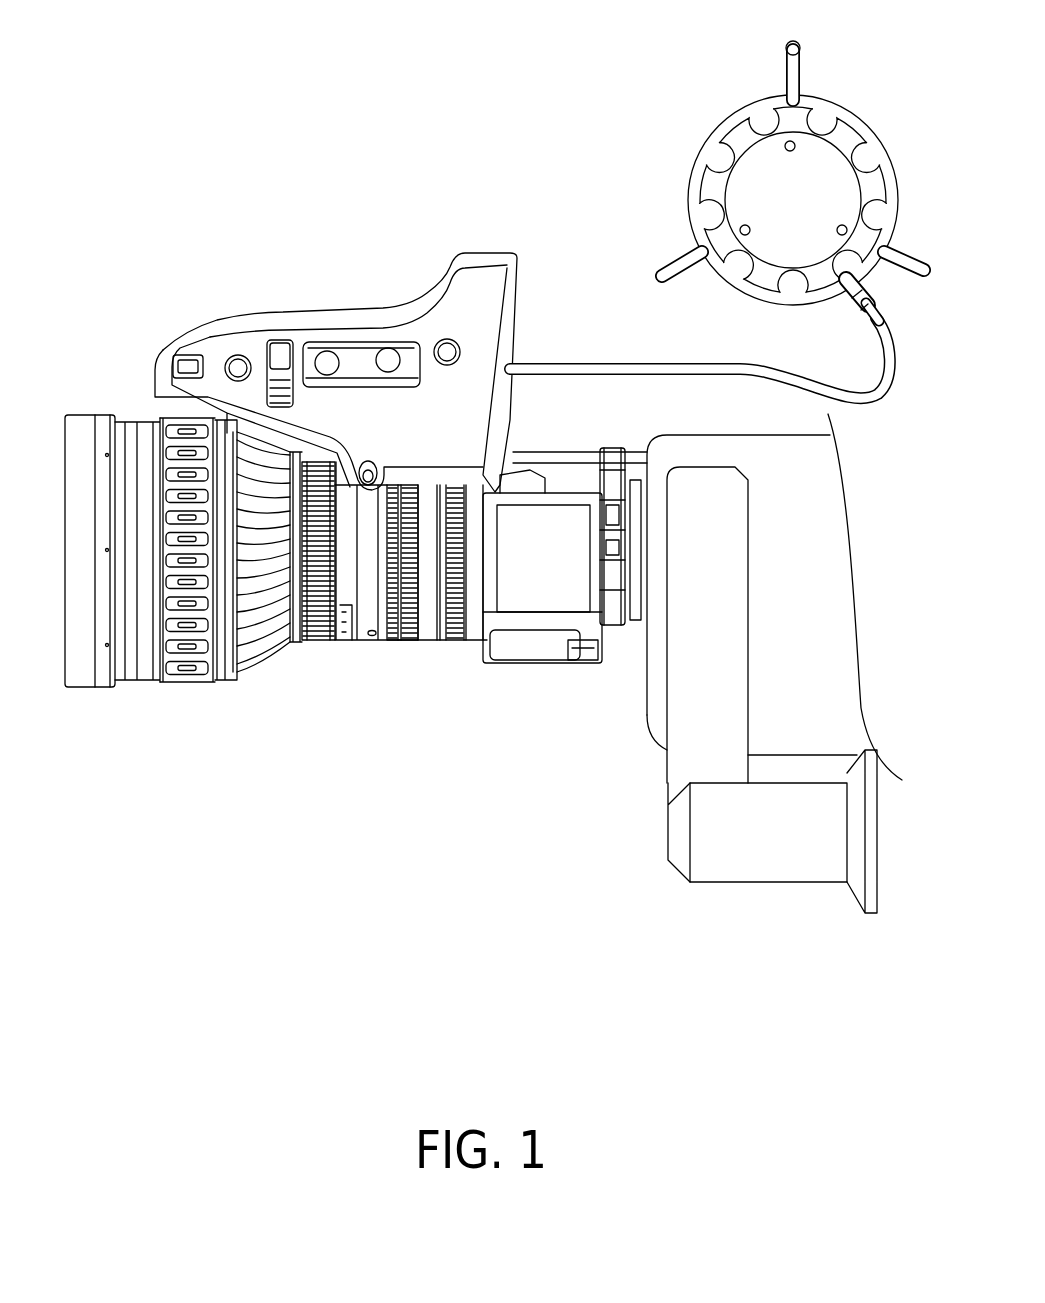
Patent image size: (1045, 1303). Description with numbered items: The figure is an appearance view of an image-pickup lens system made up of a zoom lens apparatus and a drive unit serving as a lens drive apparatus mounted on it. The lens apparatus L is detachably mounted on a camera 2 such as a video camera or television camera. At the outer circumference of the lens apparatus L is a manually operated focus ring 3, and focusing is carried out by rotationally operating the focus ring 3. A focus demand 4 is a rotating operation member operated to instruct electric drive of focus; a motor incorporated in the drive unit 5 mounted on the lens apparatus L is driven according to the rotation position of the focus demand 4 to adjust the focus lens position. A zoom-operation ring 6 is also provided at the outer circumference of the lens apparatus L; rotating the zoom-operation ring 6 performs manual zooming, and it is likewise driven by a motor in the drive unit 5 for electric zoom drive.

The lens apparatus L is at (244, 697).
The camera 2 is at (685, 687).
The focus ring 3 is at (316, 645).
The focus demand 4 is at (750, 107).
The drive unit 5 is at (318, 324).
The zoom-operation ring 6 is at (393, 645).